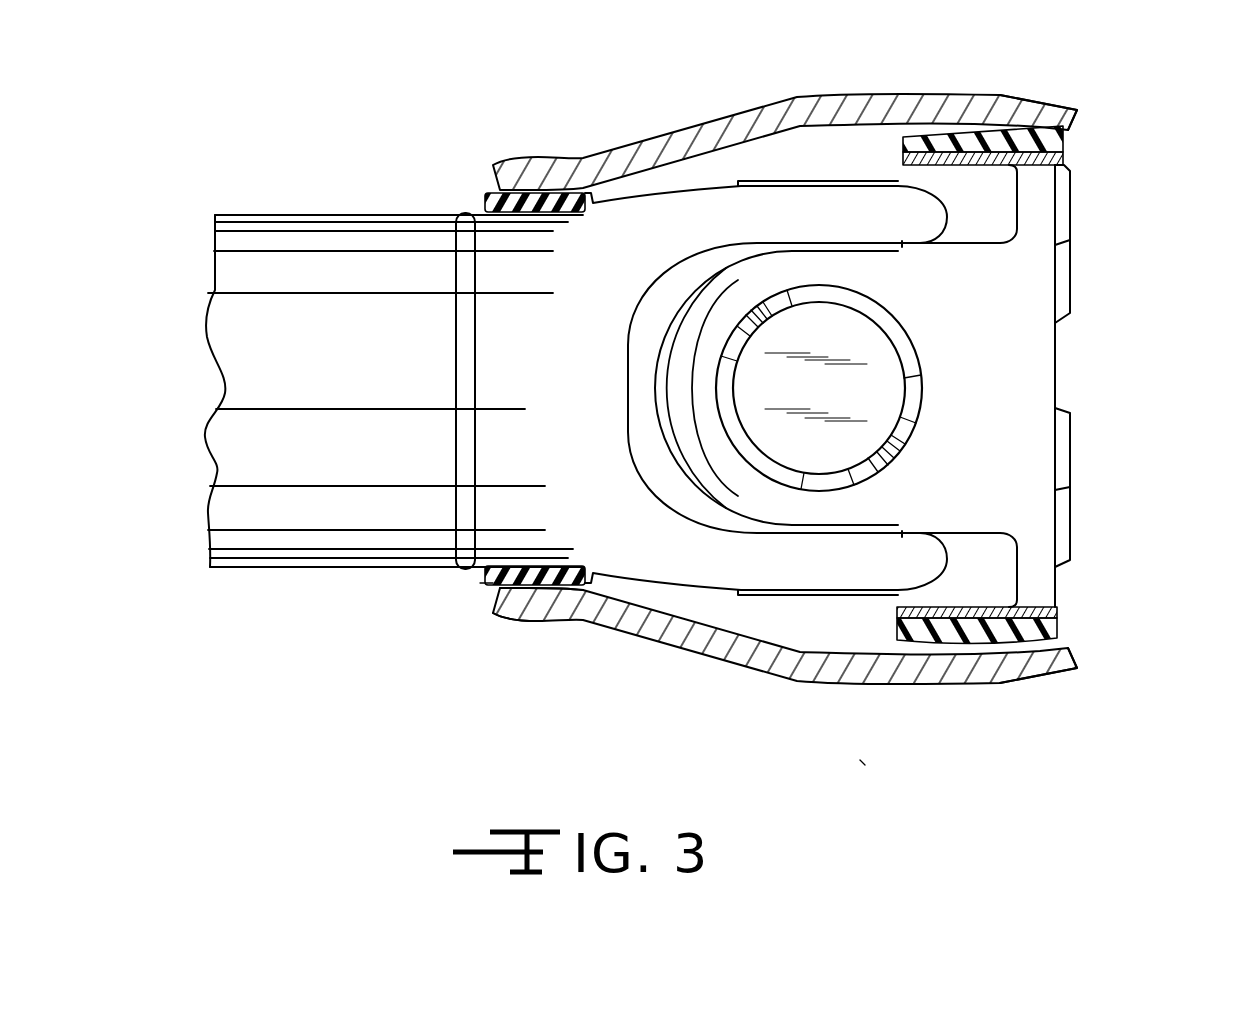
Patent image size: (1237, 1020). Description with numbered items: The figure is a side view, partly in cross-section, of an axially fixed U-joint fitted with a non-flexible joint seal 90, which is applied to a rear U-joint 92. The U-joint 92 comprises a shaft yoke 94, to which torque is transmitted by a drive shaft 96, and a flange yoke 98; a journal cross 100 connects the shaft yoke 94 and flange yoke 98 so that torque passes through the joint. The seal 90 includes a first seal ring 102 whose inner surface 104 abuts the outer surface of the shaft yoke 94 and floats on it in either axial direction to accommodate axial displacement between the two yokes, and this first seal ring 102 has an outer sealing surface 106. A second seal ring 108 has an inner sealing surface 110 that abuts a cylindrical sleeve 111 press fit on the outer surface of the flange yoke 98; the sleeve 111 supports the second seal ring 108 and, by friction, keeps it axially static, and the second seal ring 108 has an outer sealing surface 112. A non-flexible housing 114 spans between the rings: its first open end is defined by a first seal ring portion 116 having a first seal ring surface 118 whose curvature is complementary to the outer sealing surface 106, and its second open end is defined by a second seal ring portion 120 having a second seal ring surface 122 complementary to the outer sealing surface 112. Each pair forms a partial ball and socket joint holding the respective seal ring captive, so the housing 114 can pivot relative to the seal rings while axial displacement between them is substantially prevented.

The non-flexible joint seal 90 is at (861, 755).
The rear U-joint 92 is at (1160, 606).
The shaft yoke 94 is at (623, 577).
The drive shaft 96 is at (333, 568).
The flange yoke 98 is at (1057, 352).
The journal cross 100 is at (762, 395).
The first seal ring 102 is at (464, 590).
The inner surface 104 is at (565, 564).
The outer sealing surface 106 is at (516, 600).
The second seal ring 108 is at (1072, 632).
The inner sealing surface 110 is at (1032, 606).
The cylindrical sleeve 111 is at (1065, 157).
The outer sealing surface 112 is at (967, 660).
The non-flexible housing 114 is at (740, 665).
The first seal ring portion 116 is at (531, 155).
The first seal ring surface 118 is at (510, 213).
The second seal ring portion 120 is at (1058, 99).
The second seal ring surface 122 is at (1015, 165).